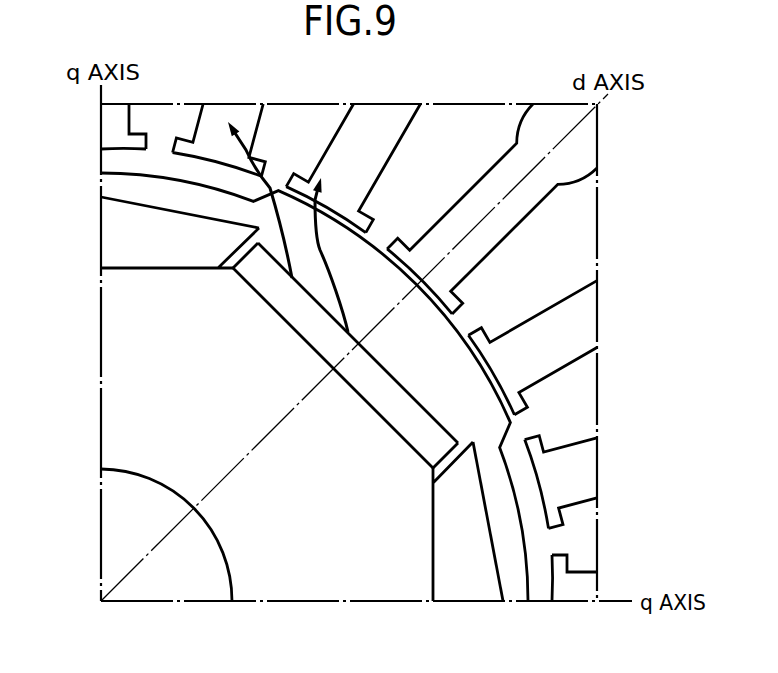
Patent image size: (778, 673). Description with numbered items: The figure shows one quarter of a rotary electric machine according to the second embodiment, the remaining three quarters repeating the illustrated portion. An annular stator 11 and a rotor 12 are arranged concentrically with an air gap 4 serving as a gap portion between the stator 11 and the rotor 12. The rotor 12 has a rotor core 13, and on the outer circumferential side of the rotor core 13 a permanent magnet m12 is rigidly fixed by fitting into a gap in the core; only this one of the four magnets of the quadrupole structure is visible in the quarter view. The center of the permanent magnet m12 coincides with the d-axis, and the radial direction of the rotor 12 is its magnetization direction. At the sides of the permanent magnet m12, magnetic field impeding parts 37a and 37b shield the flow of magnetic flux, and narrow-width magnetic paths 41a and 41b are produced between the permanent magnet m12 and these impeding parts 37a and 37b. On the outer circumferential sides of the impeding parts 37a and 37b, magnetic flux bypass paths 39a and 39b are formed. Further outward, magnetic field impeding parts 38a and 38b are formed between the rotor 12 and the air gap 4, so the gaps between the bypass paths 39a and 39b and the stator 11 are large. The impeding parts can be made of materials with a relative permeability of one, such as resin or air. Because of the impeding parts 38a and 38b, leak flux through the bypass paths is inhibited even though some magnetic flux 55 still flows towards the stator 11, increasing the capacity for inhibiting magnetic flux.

The air gap 4 is at (532, 415).
The stator 11 is at (349, 352).
The rotor 12 is at (135, 322).
The rotor core 13 is at (150, 410).
The magnetic field impeding part 37a is at (150, 223).
The magnetic field impeding part 37b is at (465, 581).
The magnetic field impeding part 38a is at (143, 161).
The magnetic field impeding part 38b is at (523, 481).
The magnetic flux bypass path 39a is at (137, 185).
The magnetic flux bypass path 39b is at (516, 584).
The narrow-width magnetic path 41a is at (240, 257).
The narrow-width magnetic path 41b is at (447, 455).
The magnetic flux 55 is at (347, 82).
The permanent magnet m12 is at (245, 369).